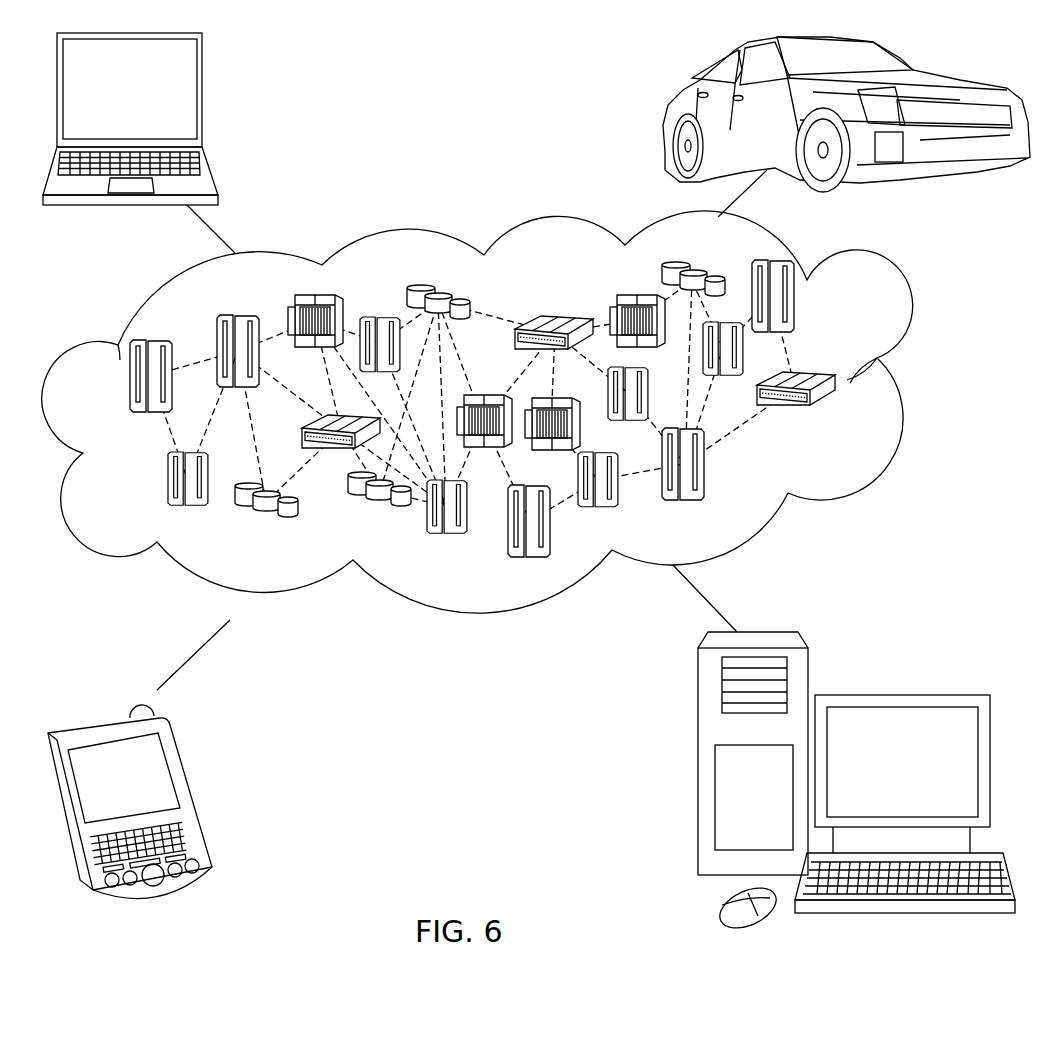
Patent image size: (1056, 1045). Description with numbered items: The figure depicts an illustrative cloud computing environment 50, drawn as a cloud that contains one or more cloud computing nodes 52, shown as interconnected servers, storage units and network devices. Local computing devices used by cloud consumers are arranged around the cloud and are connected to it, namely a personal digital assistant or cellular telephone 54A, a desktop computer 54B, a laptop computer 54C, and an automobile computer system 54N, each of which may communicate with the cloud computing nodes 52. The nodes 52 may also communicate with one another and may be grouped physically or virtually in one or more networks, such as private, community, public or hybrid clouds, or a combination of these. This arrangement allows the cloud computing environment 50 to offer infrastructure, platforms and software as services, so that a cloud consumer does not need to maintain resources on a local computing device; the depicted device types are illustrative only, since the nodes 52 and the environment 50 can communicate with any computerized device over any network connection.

The cloud computing environment 50 is at (900, 386).
The cloud computing nodes 52 is at (850, 421).
The personal digital assistant or cellular telephone 54A is at (192, 790).
The desktop computer 54B is at (900, 693).
The laptop computer 54C is at (203, 97).
The automobile computer system 54N is at (668, 112).